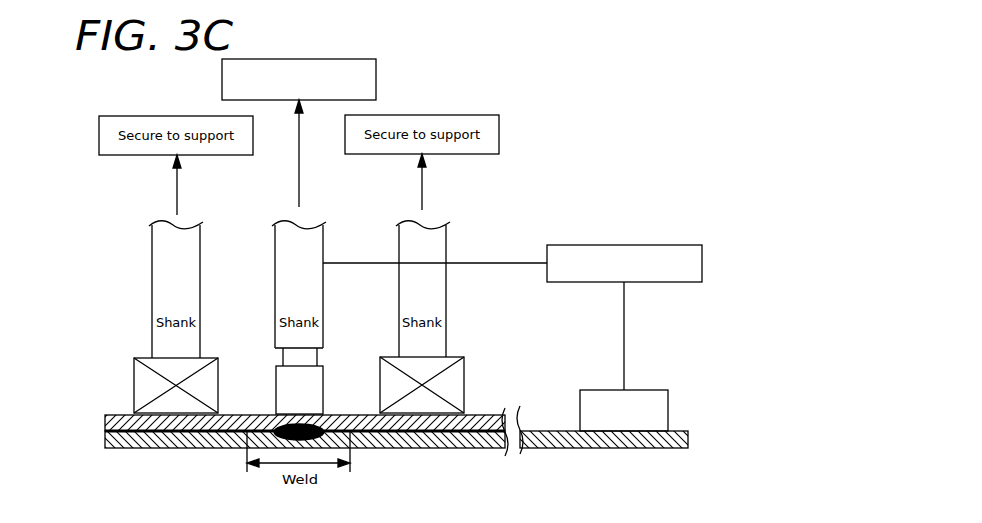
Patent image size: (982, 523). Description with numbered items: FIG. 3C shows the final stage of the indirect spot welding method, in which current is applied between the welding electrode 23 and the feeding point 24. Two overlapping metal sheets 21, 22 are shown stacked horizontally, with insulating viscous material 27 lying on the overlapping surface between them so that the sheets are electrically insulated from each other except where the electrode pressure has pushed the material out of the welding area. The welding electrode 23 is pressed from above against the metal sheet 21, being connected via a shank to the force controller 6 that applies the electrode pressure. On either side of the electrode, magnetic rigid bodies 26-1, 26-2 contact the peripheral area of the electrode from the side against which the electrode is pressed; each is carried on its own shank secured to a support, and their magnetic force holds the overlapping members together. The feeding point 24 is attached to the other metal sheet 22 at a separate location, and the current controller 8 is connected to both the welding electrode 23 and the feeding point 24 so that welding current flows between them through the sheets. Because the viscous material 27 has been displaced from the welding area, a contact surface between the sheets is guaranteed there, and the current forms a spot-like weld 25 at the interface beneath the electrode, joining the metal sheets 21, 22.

The force controller 6 is at (298, 59).
The current controller 8 is at (622, 245).
The metal sheet 21 is at (105, 420).
The metal sheet 22 is at (105, 440).
The electrode 23 is at (315, 383).
The feeding point 24 is at (668, 410).
The weld 25 is at (278, 425).
The magnetic rigid body 26-1 is at (142, 373).
The magnetic rigid body 26-2 is at (458, 373).
The insulating viscous material 27 is at (182, 433).